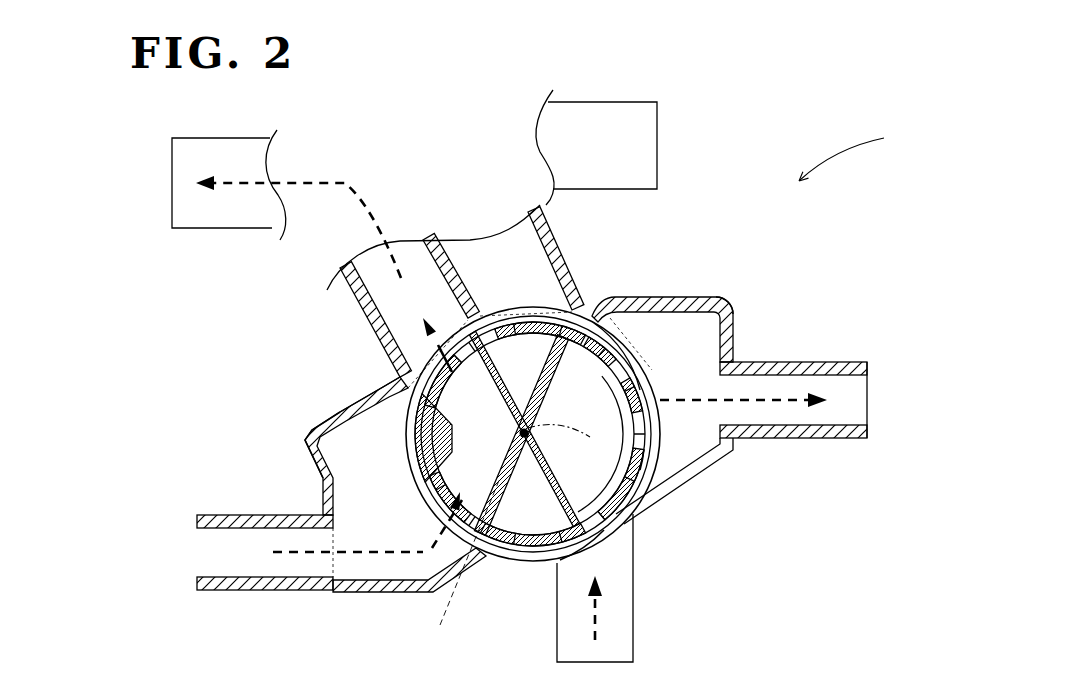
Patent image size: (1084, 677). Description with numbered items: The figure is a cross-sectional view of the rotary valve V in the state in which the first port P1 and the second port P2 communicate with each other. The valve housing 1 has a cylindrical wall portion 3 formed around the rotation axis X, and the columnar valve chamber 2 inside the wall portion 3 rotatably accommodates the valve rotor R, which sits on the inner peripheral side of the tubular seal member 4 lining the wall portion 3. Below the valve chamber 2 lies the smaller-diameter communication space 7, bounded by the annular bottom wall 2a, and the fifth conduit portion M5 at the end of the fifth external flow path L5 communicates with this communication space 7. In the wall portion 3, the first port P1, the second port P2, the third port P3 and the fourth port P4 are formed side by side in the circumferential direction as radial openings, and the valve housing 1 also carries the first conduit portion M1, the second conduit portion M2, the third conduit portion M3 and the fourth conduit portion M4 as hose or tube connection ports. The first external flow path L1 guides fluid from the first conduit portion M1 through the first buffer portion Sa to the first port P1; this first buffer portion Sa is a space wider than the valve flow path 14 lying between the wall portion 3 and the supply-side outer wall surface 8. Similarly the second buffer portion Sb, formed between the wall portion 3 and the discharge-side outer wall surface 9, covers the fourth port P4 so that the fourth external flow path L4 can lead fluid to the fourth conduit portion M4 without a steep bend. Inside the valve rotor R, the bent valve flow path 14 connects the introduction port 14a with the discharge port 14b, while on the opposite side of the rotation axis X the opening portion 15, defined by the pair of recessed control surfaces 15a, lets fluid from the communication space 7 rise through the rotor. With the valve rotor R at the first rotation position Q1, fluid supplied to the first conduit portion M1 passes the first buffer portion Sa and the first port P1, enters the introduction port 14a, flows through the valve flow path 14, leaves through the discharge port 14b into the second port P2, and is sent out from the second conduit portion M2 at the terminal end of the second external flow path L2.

The valve housing 1 is at (545, 246).
The valve chamber 2 is at (695, 452).
The annular bottom wall 2a is at (614, 320).
The wall portion 3 is at (602, 536).
The seal member 4 is at (643, 432).
The communication space 7 is at (590, 482).
The supply-side outer wall surface 8 is at (305, 447).
The discharge-side outer wall surface 9 is at (728, 306).
The valve flow path 14 is at (480, 407).
The introduction port 14a is at (470, 517).
The discharge port 14b is at (425, 350).
The opening portion 15 is at (578, 402).
The control surfaces 15a is at (518, 424).
The first conduit portion M1 is at (278, 590).
The second conduit portion M2 is at (225, 136).
The third conduit portion M3 is at (640, 138).
The fourth conduit portion M4 is at (800, 434).
The fifth conduit portion M5 is at (637, 577).
The first external flow path L1 is at (360, 560).
The second external flow path L2 is at (340, 175).
The fourth external flow path L4 is at (772, 396).
The fifth external flow path L5 is at (590, 622).
The first port P1 is at (330, 490).
The second port P2 is at (435, 358).
The third port P3 is at (513, 323).
The fourth port P4 is at (622, 355).
The first buffer portion Sa is at (407, 525).
The second buffer portion Sb is at (710, 348).
The first rotation position Q1 is at (455, 569).
The valve rotor R is at (375, 415).
The rotary valve V is at (852, 149).
The rotation axis X is at (571, 438).